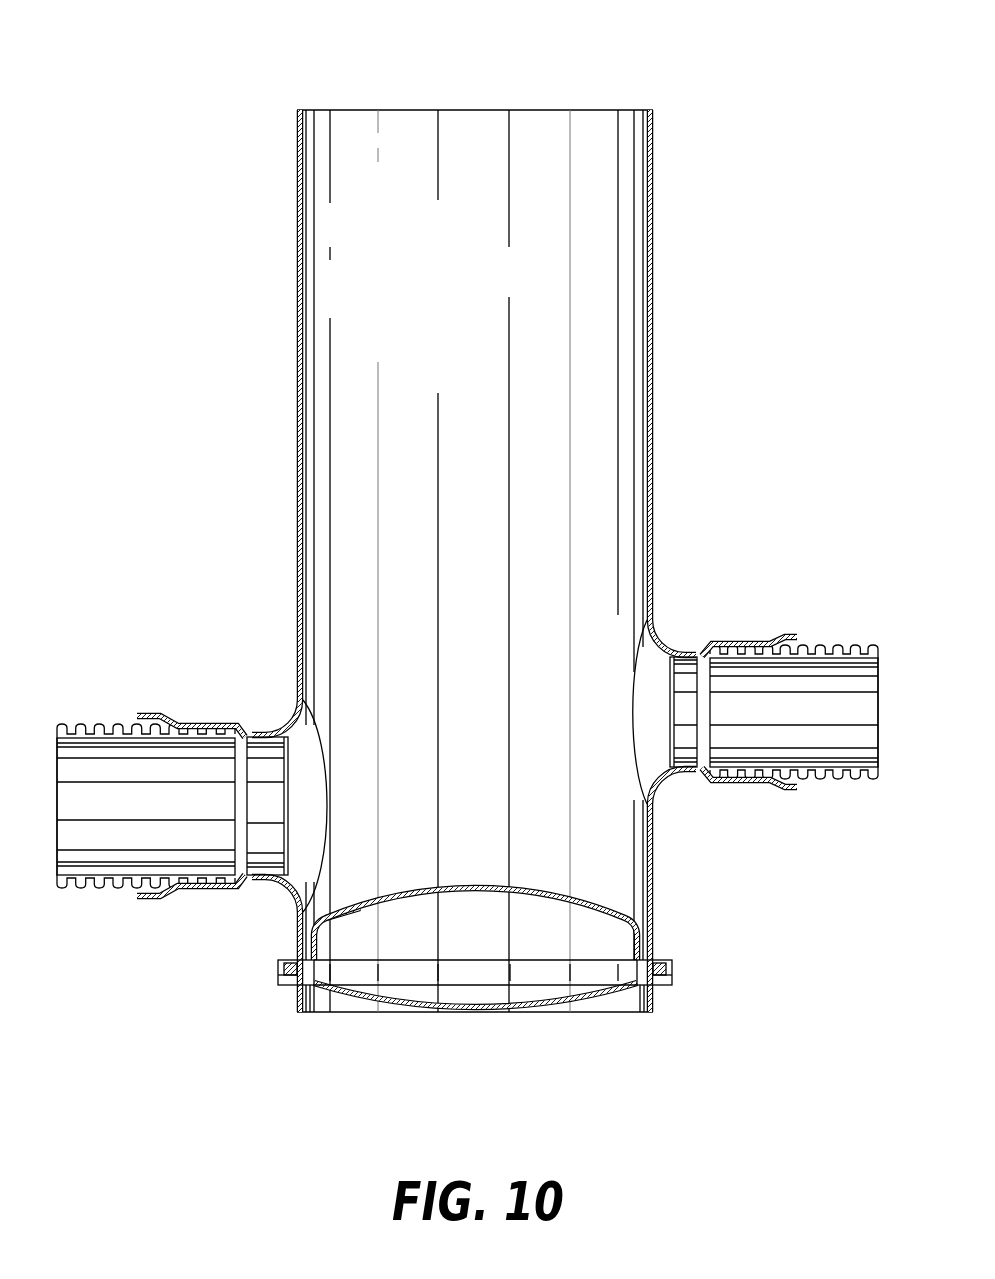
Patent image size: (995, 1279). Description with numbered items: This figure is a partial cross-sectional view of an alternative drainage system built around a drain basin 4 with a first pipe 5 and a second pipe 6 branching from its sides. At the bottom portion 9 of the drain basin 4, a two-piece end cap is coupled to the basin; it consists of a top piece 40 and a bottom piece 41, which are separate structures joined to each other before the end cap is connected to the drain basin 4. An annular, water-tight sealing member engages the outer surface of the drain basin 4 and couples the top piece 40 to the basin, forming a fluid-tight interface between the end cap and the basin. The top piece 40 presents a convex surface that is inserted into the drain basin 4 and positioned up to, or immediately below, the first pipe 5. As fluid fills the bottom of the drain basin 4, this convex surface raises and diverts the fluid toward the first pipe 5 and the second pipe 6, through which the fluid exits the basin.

The drain basin 4 is at (712, 233).
The first pipe 5 is at (68, 722).
The second pipe 6 is at (872, 646).
The bottom portion 9 is at (483, 784).
The top piece 40 is at (355, 896).
The bottom piece 41 is at (286, 1004).